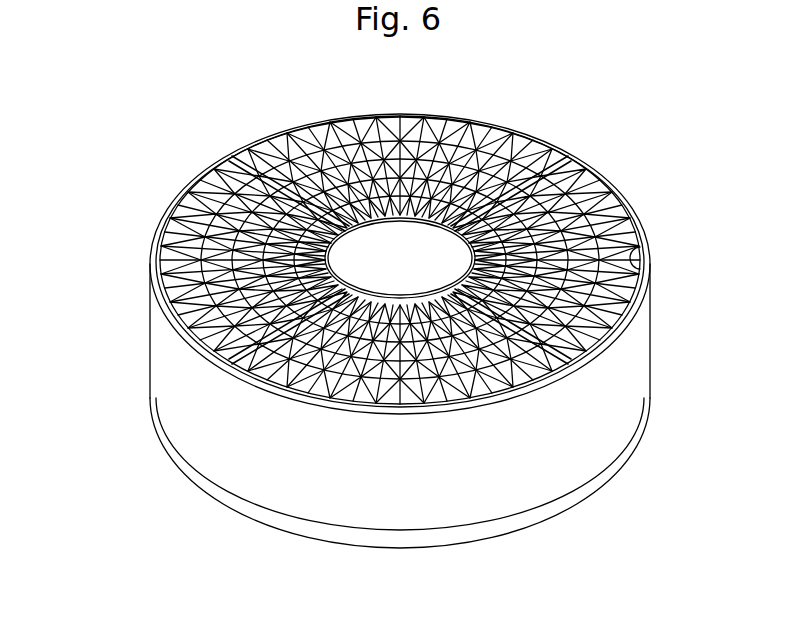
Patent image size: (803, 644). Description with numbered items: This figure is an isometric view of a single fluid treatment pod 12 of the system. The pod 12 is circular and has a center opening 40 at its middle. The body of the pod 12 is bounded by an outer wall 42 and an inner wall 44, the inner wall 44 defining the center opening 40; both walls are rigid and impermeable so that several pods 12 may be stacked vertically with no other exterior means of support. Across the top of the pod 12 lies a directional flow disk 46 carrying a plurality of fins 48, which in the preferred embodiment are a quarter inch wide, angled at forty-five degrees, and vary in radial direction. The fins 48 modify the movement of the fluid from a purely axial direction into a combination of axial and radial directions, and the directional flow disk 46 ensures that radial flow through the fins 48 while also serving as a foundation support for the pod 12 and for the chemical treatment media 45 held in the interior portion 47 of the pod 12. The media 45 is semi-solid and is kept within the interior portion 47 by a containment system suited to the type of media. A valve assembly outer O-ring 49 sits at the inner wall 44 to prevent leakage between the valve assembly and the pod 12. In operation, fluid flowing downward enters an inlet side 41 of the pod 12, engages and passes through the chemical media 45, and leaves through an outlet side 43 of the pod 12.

The pod 12 is at (120, 175).
The center opening 40 is at (500, 176).
The inlet side 41 is at (278, 150).
The outer wall 42 is at (573, 465).
The outlet side 43 is at (358, 545).
The inner wall 44 is at (436, 256).
The chemical treatment media 45 is at (247, 316).
The directional flow disk 46 is at (607, 282).
The interior portion 47 is at (592, 303).
The fins 48 is at (187, 257).
The valve assembly outer O-ring 49 is at (400, 262).